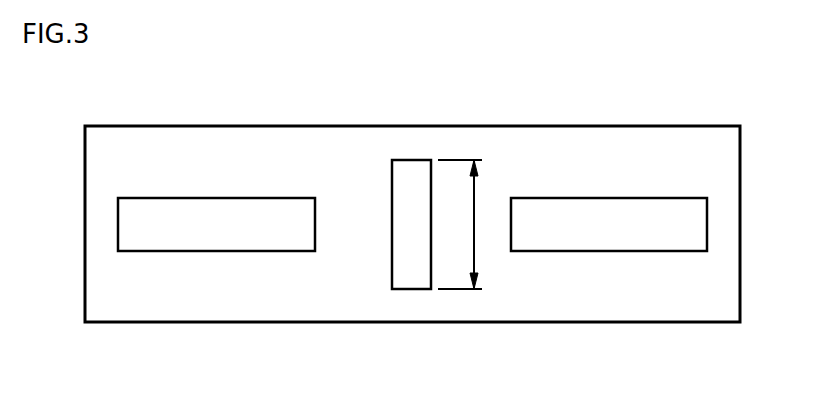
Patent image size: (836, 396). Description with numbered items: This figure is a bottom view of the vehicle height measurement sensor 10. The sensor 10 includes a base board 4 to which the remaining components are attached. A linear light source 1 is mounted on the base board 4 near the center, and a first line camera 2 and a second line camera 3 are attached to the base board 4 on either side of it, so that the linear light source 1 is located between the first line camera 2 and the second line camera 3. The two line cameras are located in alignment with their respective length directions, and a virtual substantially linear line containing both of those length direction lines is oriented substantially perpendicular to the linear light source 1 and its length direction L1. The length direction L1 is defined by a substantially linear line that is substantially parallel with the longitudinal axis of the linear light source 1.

The linear light source 1 is at (413, 275).
The first line camera 2 is at (222, 242).
The second line camera 3 is at (599, 238).
The base board 4 is at (715, 292).
The vehicle height measurement sensor 10 is at (718, 113).
The length direction of linear light source L1 is at (474, 212).